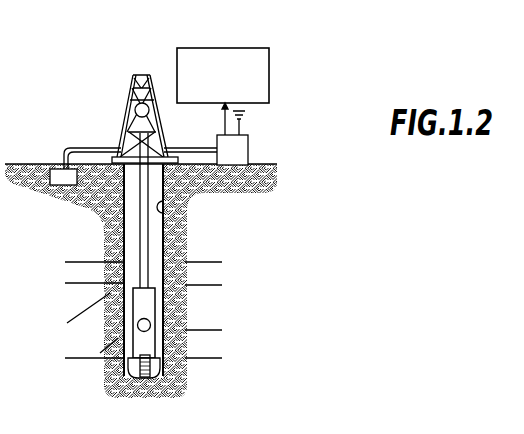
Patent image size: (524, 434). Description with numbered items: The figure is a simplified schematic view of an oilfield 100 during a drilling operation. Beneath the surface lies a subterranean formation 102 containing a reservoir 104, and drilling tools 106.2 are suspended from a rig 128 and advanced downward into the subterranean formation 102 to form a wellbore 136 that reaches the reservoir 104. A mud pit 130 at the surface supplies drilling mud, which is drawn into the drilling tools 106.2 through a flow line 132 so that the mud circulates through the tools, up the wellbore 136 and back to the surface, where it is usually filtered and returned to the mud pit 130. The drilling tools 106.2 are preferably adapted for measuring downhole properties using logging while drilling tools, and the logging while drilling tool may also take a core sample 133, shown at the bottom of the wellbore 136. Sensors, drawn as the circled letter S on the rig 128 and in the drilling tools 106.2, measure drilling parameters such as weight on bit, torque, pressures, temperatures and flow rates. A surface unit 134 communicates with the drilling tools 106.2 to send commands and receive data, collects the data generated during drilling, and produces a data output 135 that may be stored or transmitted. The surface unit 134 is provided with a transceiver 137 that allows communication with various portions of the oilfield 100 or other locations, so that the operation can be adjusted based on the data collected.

The oilfield 100 is at (70, 85).
The subterranean formation 102 is at (205, 254).
The reservoir 104 is at (228, 315).
The drilling tools 106.2 is at (133, 310).
The rig 128 is at (122, 118).
The mud pit 130 is at (64, 186).
The flow line 132 is at (62, 150).
The core sample 133 is at (126, 368).
The surface unit 134 is at (249, 155).
The data output 135 is at (252, 48).
The wellbore 136 is at (186, 222).
The transceiver 137 is at (244, 118).